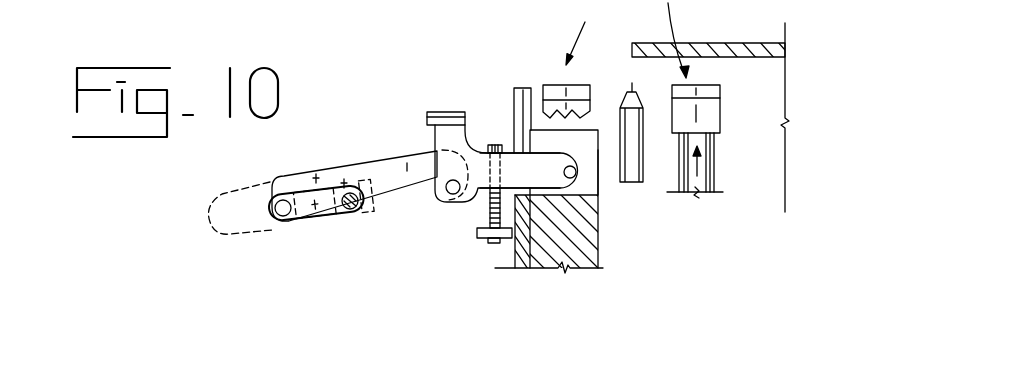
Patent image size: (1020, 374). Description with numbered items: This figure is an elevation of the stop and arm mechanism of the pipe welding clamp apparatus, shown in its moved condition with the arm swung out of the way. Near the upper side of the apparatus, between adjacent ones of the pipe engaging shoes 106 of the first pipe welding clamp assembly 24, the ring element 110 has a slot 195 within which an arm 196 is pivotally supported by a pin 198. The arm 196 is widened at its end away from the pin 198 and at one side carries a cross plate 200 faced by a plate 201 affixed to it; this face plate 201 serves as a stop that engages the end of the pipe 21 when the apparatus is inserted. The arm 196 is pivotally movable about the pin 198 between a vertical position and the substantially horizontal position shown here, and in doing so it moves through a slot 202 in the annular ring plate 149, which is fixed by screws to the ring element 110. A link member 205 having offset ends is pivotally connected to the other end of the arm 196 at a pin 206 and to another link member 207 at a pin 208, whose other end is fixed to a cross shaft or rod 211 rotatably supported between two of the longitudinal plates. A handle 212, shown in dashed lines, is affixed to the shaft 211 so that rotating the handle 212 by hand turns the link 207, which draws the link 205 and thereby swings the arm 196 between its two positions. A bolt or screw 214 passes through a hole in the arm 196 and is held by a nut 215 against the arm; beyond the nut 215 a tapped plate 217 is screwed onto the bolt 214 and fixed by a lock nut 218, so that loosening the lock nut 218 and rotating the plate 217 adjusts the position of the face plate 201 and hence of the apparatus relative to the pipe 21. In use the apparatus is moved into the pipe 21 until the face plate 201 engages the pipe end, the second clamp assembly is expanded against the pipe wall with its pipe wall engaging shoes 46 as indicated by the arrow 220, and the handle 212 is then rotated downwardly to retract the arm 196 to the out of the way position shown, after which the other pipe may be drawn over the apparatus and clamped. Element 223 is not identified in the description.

The pipe 21 is at (712, 43).
The first pipe welding clamp assembly 24 is at (580, 32).
The pipe wall engaging shoe 46 is at (721, 109).
The pipe engaging shoe 106 is at (589, 100).
The ring element 110 is at (603, 266).
The annular ring plate 149 is at (509, 270).
The slot 195 is at (597, 158).
The arm 196 is at (509, 152).
The pin 198 is at (599, 190).
The cross plate 200 is at (433, 112).
The plate 201 is at (445, 111).
The slot 202 is at (523, 87).
The link member 205 is at (354, 163).
The pin 206 is at (445, 189).
The link member 207 is at (313, 222).
The pin 208 is at (282, 221).
The cross shaft or rod 211 is at (348, 222).
The handle 212 is at (232, 240).
The bolt or screw 214 is at (488, 216).
The nut 215 is at (488, 203).
The tapped plate 217 is at (479, 237).
The lock nut 218 is at (487, 243).
The arrow 220 is at (698, 172).
The guide pin 223 is at (643, 163).